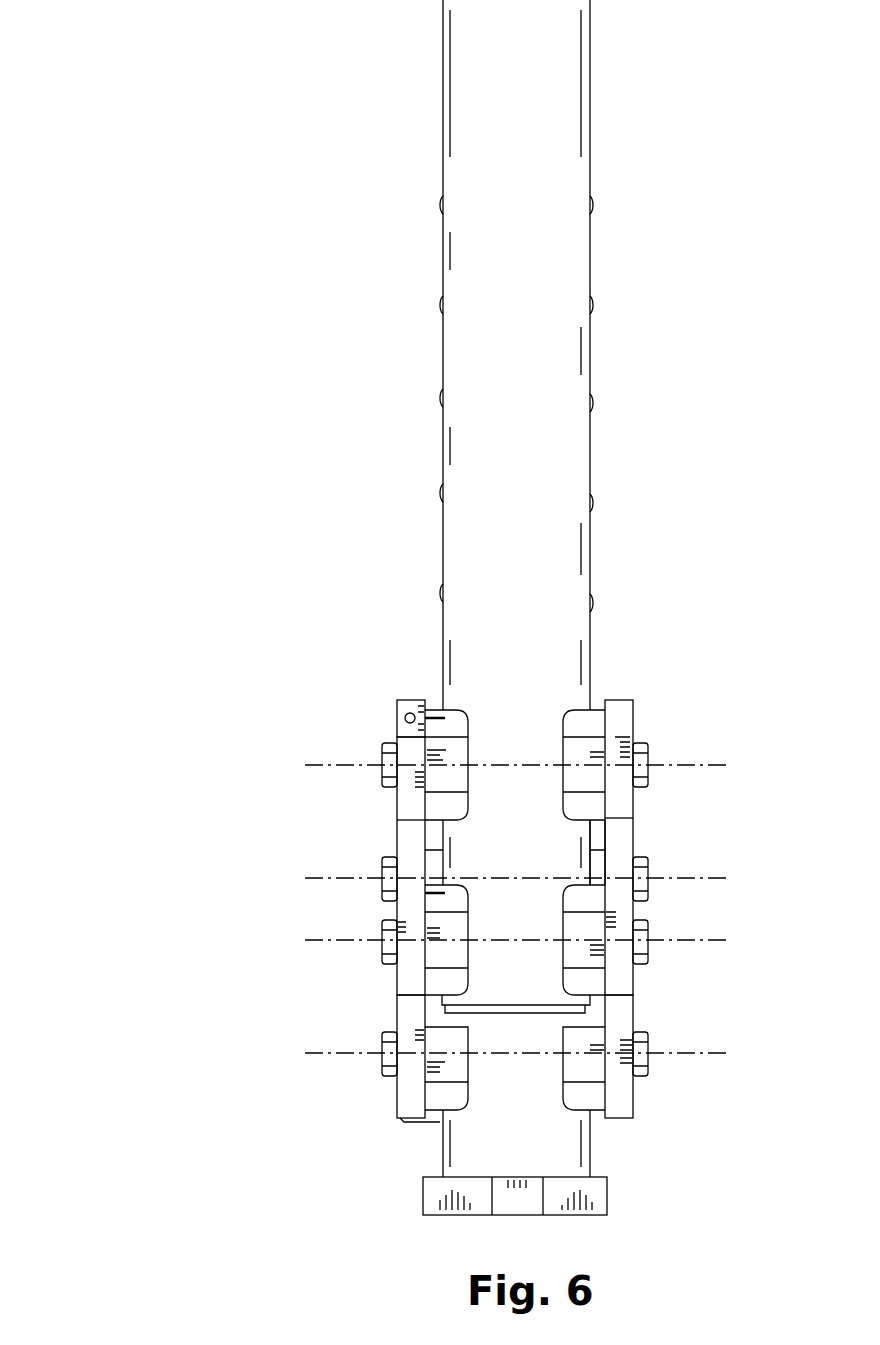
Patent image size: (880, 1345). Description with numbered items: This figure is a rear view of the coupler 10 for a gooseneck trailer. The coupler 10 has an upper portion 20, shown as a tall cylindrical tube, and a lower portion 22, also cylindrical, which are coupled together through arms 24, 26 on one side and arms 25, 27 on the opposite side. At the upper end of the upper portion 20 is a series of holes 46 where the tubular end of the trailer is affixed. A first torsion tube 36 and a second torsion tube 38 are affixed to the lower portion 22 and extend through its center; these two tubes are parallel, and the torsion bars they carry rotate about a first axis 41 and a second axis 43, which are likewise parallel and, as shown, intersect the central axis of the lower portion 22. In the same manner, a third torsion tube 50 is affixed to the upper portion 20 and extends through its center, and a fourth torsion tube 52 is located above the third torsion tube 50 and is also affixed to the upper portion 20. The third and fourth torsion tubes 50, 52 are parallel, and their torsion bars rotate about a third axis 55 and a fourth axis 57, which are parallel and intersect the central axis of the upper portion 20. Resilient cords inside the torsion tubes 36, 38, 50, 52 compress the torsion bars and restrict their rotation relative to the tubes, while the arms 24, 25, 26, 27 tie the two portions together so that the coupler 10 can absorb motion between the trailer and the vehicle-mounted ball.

The coupler 10 is at (398, 607).
The upper portion 20 is at (603, 441).
The lower portion 22 is at (593, 1147).
The arm 24 is at (633, 712).
The arm 25 is at (395, 832).
The arm 26 is at (635, 1005).
The arm 27 is at (397, 987).
The first torsion tube 36 is at (595, 1073).
The second torsion tube 38 is at (598, 832).
The first axis 41 is at (323, 1053).
The second axis 43 is at (318, 878).
The holes 46 is at (443, 398).
The third torsion tube 50 is at (595, 900).
The fourth torsion tube 52 is at (595, 710).
The third axis 55 is at (318, 940).
The fourth axis 57 is at (338, 760).